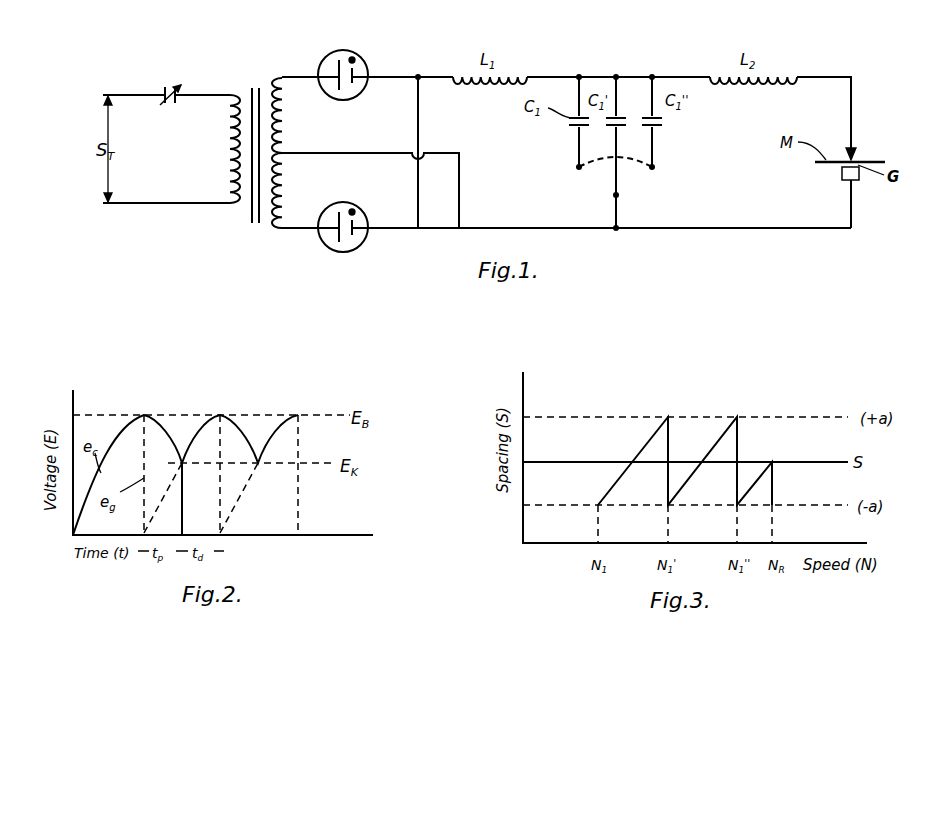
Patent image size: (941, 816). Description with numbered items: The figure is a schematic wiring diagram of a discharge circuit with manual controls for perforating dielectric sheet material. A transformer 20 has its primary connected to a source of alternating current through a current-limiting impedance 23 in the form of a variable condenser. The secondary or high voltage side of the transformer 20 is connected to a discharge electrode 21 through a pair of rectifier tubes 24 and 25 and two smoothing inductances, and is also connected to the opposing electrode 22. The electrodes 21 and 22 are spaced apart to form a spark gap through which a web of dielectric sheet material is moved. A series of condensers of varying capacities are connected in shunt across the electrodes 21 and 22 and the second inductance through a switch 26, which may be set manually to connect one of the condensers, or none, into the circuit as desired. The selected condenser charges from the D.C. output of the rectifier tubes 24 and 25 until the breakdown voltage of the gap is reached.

The transformer 20 is at (250, 86).
The discharge electrode 21 is at (855, 130).
The opposing discharge electrode 22 is at (853, 201).
The current-limiting impedance 23 is at (160, 91).
The rectifier tube 24 is at (330, 55).
The rectifier tube 25 is at (360, 246).
The switch 26 is at (616, 160).